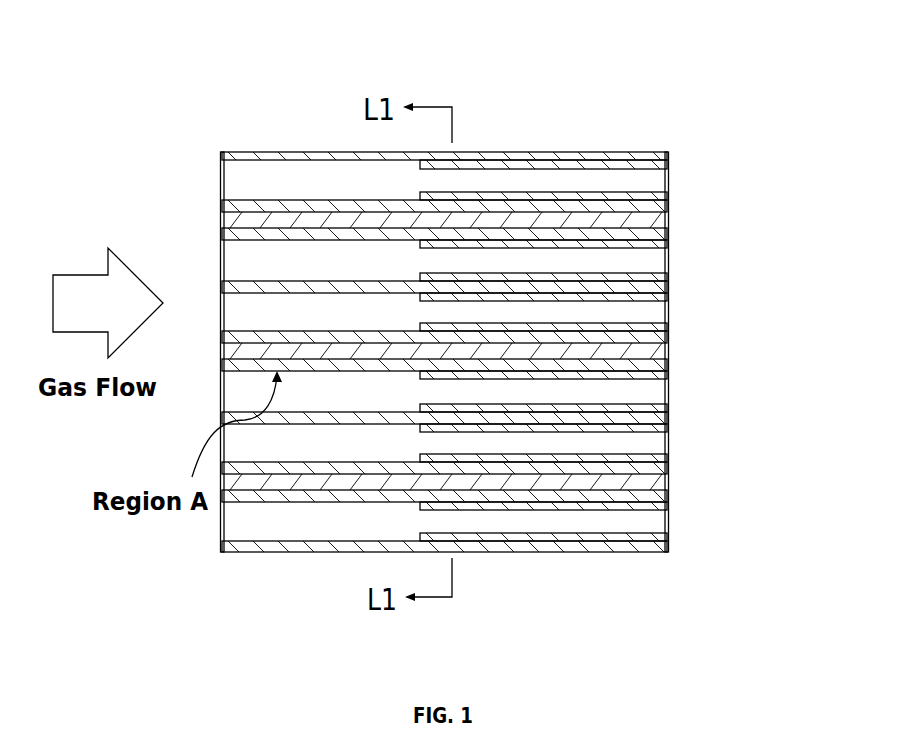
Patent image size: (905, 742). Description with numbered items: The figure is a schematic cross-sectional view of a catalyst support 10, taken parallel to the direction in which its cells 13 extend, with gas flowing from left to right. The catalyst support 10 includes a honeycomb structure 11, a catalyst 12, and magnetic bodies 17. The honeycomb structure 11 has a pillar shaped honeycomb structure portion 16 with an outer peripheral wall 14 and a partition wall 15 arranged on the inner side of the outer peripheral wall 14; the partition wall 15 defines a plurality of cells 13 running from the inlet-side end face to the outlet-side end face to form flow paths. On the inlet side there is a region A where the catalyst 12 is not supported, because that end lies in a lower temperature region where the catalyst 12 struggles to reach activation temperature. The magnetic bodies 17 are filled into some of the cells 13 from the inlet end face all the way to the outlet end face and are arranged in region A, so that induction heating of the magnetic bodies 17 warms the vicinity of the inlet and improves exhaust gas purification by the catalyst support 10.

The catalyst support 10 is at (493, 96).
The honeycomb structure 11 is at (672, 187).
The catalyst 12 is at (668, 407).
The cells 13 is at (237, 278).
The outer peripheral wall 14 is at (608, 152).
The partition wall 15 is at (668, 468).
The pillar shaped honeycomb structure portion 16 is at (216, 523).
The magnetic bodies 17 is at (668, 351).